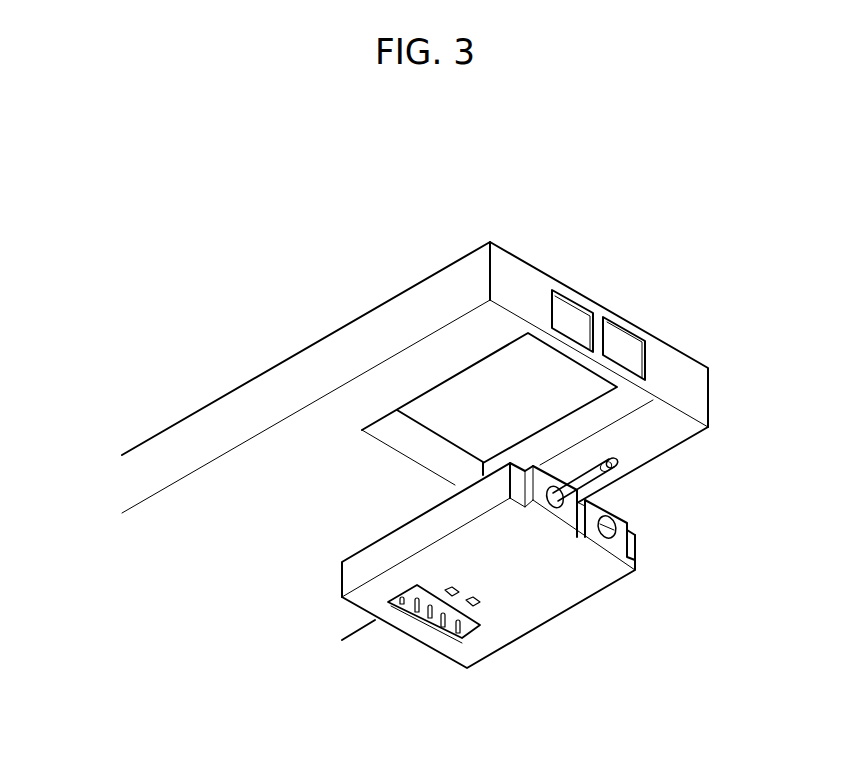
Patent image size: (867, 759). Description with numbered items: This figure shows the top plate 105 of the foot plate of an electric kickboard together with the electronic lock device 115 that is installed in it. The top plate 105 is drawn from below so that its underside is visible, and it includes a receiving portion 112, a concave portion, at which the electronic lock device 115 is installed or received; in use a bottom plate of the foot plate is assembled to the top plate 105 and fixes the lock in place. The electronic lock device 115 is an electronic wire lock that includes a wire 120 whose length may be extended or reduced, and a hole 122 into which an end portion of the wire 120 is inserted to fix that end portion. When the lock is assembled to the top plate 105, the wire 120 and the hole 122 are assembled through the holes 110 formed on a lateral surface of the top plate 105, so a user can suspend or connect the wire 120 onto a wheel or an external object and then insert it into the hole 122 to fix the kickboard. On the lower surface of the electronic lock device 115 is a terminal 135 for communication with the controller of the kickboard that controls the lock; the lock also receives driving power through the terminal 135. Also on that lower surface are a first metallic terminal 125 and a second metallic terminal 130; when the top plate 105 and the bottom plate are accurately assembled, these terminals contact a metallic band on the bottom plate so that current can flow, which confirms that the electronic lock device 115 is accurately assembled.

The top plate of the foot plate 105 is at (511, 268).
The holes 110 is at (572, 320).
The receiving portion 112 is at (613, 413).
The electronic lock device 115 is at (568, 592).
The wire 120 is at (620, 462).
The hole 122 is at (628, 510).
The first metallic terminal 125 is at (452, 598).
The second metallic terminal 130 is at (477, 607).
The terminal 135 is at (437, 623).